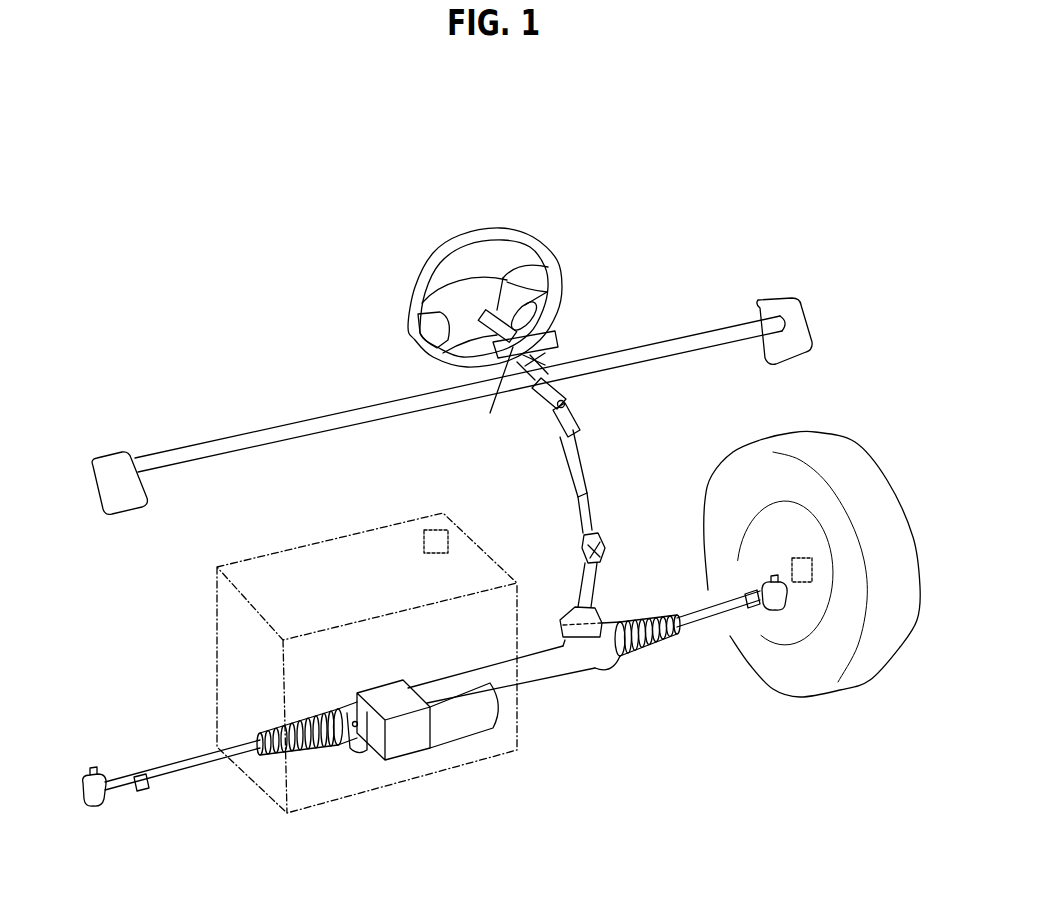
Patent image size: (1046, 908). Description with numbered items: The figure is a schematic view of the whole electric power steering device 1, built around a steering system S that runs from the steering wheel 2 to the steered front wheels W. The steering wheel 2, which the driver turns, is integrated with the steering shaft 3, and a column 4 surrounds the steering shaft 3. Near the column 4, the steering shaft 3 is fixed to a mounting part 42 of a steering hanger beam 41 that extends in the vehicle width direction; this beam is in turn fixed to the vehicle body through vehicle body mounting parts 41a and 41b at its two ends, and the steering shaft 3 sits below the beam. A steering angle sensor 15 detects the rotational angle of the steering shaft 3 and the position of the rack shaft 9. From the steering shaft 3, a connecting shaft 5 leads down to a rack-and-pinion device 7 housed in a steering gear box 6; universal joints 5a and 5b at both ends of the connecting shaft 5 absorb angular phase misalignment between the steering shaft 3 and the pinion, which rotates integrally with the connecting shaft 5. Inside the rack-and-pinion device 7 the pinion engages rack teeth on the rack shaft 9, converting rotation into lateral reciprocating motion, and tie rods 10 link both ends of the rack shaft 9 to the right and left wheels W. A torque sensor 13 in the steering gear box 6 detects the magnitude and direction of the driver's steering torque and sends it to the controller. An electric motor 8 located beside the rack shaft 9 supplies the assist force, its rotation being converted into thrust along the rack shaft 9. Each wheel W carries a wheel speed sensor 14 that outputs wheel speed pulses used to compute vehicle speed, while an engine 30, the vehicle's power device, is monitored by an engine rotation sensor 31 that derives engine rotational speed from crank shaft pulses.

The electric power steering device 1 is at (668, 188).
The steering system S is at (457, 215).
The steering wheel 2 is at (502, 228).
The steering shaft 3 is at (545, 258).
The column 4 is at (552, 345).
The mounting part 42 is at (558, 352).
The steering angle sensor 15 is at (490, 413).
The connecting shaft 5 is at (585, 488).
The universal joint 5a is at (577, 428).
The universal joint 5b is at (603, 551).
The torque sensor 13 is at (592, 608).
The steering hanger beam 41 is at (314, 416).
The vehicle body mounting part 41a is at (788, 308).
The vehicle body mounting part 41b is at (114, 460).
The engine 30 is at (347, 530).
The engine rotation sensor 31 is at (448, 541).
The steering gear box 6 is at (550, 636).
The rack shaft 9 is at (523, 668).
The rack-and-pinion device 7 is at (595, 660).
The electric motor 8 is at (452, 717).
The tie rod 10 is at (103, 793).
The wheel W is at (823, 447).
The wheel speed sensor 14 is at (803, 557).